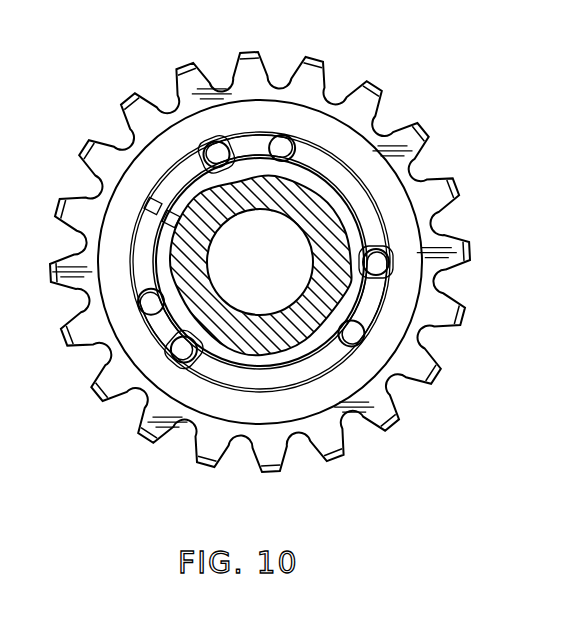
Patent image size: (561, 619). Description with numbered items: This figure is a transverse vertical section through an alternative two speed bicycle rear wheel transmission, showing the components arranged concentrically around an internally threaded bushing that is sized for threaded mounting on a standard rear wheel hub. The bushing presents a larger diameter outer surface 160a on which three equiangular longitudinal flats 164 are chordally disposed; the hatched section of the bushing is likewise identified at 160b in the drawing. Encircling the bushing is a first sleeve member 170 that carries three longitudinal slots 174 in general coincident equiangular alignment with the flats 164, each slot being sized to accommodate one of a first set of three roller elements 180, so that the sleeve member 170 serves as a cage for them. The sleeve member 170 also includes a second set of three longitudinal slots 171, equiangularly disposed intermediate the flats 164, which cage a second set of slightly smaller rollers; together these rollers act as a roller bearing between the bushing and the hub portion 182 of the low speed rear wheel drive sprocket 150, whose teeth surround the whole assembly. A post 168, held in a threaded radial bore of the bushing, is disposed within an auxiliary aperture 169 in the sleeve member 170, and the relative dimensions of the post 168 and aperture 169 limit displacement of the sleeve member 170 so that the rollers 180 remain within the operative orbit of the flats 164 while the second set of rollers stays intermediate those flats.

The low speed rear wheel drive sprocket 150 is at (354, 182).
The larger diameter outer surface 160a is at (392, 190).
The hub portion 160b is at (260, 354).
The longitudinal flats 164 is at (206, 146).
The post 168 is at (150, 206).
The auxiliary aperture 169 is at (148, 198).
The first sleeve member 170 is at (332, 162).
The second set of longitudinal slots 171 is at (292, 140).
The longitudinal slots 174 is at (222, 140).
The roller elements 180 is at (215, 142).
The hub portion 182 is at (400, 190).